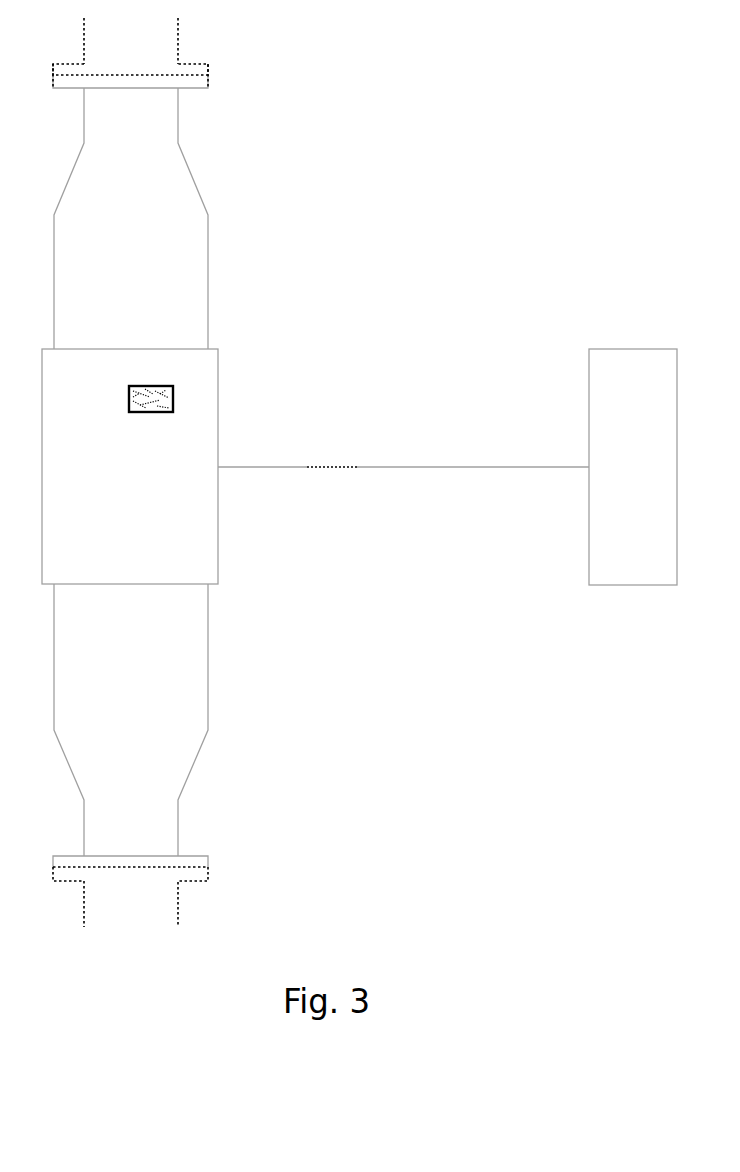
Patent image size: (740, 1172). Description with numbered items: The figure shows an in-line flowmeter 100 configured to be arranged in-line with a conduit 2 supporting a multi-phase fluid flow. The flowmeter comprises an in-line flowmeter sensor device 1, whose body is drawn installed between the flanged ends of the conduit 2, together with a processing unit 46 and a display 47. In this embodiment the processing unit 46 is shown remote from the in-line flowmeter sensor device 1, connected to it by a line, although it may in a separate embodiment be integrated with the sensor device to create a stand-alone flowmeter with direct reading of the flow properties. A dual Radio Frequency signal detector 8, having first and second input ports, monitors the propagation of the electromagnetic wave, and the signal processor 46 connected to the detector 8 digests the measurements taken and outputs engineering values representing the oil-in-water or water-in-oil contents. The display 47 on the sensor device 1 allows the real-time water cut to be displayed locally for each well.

The in-line flowmeter 100 is at (359, 471).
The in-line flowmeter sensor device 1 is at (130, 472).
The conduit 2 is at (130, 471).
The display 47 is at (174, 390).
The dual Radio Frequency (RF) signal detector 8 is at (447, 467).
The processing unit 46 is at (447, 467).